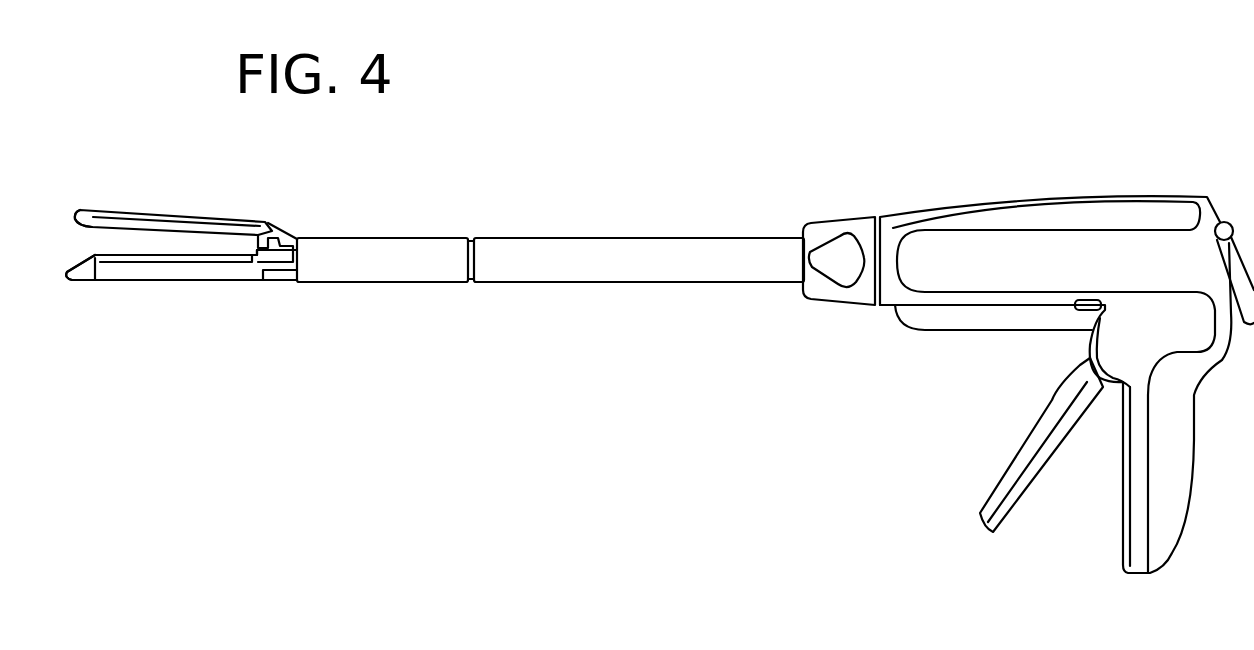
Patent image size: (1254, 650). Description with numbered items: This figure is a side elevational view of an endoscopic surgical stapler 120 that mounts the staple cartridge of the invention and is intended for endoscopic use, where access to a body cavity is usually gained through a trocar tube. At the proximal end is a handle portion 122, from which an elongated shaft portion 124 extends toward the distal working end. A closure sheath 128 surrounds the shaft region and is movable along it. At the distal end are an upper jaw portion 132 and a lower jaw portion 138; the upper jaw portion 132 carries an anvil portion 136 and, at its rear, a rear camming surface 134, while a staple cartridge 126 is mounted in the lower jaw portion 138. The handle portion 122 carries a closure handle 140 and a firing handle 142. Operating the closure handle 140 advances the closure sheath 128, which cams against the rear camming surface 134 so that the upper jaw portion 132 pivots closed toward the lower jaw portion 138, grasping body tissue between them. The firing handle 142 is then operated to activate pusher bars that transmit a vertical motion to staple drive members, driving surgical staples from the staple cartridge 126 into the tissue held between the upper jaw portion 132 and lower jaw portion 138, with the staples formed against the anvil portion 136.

The endoscopic surgical stapler 120 is at (588, 237).
The handle portion 122 is at (1079, 198).
The shaft portion 124 is at (524, 283).
The staple cartridge 126 is at (84, 283).
The closure sheath 128 is at (346, 283).
The upper jaw portion 132 is at (207, 218).
The rear camming surface 134 is at (268, 223).
The anvil portion 136 is at (158, 228).
The lower jaw portion 138 is at (200, 268).
The closure handle 140 is at (1056, 446).
The firing handle 142 is at (987, 333).